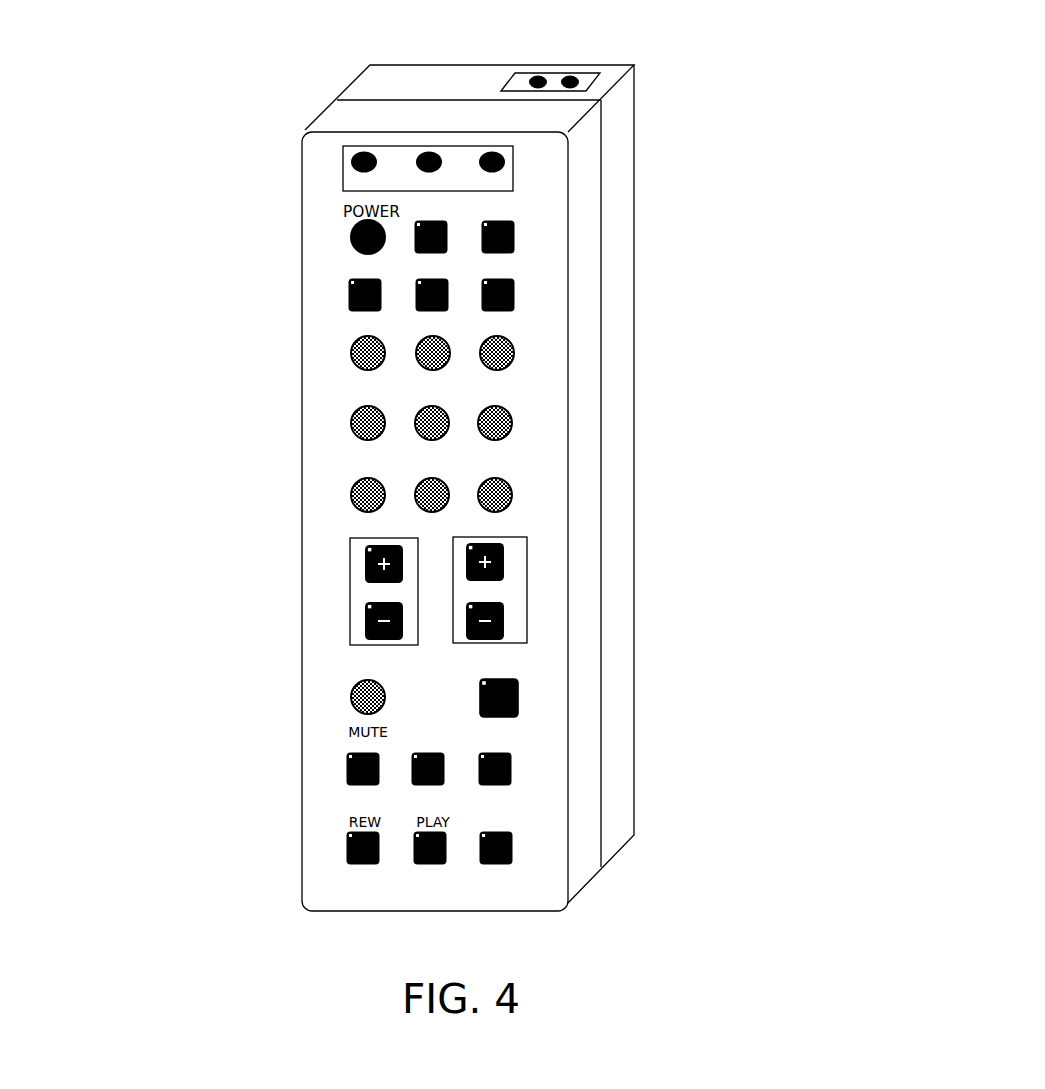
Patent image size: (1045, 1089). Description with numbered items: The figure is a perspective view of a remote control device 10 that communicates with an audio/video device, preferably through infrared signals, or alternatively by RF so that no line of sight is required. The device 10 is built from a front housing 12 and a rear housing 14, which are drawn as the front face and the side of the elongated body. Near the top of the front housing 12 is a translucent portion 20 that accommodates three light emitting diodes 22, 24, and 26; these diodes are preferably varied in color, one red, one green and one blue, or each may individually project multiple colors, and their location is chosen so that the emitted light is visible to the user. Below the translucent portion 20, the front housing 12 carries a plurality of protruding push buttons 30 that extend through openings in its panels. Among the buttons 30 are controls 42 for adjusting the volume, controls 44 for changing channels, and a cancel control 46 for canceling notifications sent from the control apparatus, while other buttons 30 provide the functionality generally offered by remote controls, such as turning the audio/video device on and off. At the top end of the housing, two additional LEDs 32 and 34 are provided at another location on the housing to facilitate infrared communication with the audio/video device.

The remote control device 10 is at (650, 333).
The front housing 12 is at (583, 845).
The rear housing 14 is at (601, 484).
The translucent portion 20 is at (618, 143).
The light emitting diode 22 is at (364, 172).
The light emitting diode 24 is at (429, 172).
The light emitting diode 26 is at (492, 172).
The push buttons 30 is at (312, 800).
The LED 32 is at (538, 76).
The LED 34 is at (572, 77).
The controls for adjusting volume 42 is at (384, 603).
The controls for changing channels 44 is at (490, 603).
The cancel control 46 is at (519, 710).